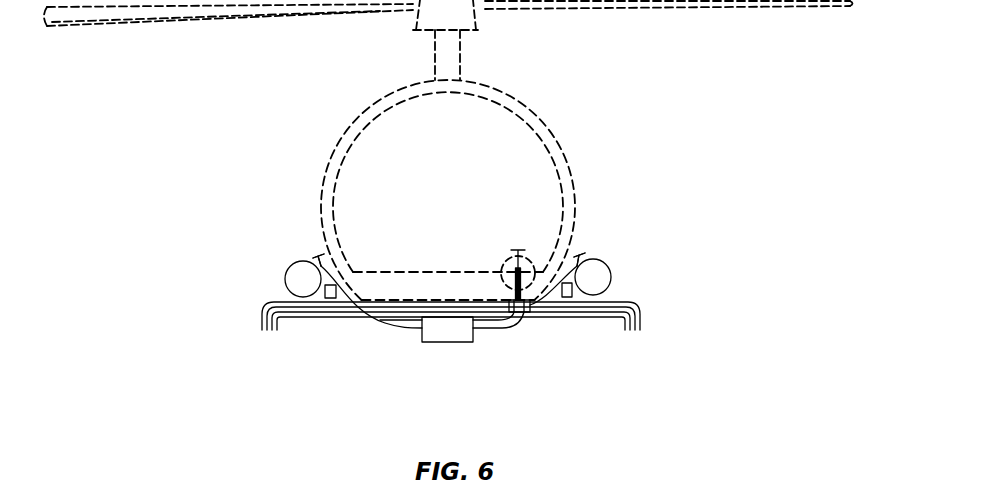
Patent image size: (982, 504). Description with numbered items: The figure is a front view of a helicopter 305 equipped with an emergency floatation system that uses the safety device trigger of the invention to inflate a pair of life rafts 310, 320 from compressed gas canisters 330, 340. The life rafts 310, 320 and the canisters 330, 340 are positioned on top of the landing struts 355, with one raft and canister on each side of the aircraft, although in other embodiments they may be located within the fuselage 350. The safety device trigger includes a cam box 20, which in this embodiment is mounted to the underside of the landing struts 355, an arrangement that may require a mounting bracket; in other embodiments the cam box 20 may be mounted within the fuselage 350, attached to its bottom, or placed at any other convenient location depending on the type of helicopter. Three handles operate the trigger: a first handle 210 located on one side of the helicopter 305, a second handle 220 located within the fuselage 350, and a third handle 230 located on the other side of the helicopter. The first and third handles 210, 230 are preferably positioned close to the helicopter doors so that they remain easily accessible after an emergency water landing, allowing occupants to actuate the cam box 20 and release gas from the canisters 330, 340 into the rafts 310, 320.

The cam box 20 is at (452, 343).
The first handle 210 is at (580, 243).
The second handle 220 is at (514, 248).
The third handle 230 is at (312, 243).
The helicopter 305 is at (326, 124).
The life raft 310 is at (612, 278).
The life raft 320 is at (285, 278).
The compressed gas canister 330 is at (568, 298).
The compressed gas canister 340 is at (330, 298).
The fuselage 350 is at (465, 168).
The landing struts 355 is at (614, 320).